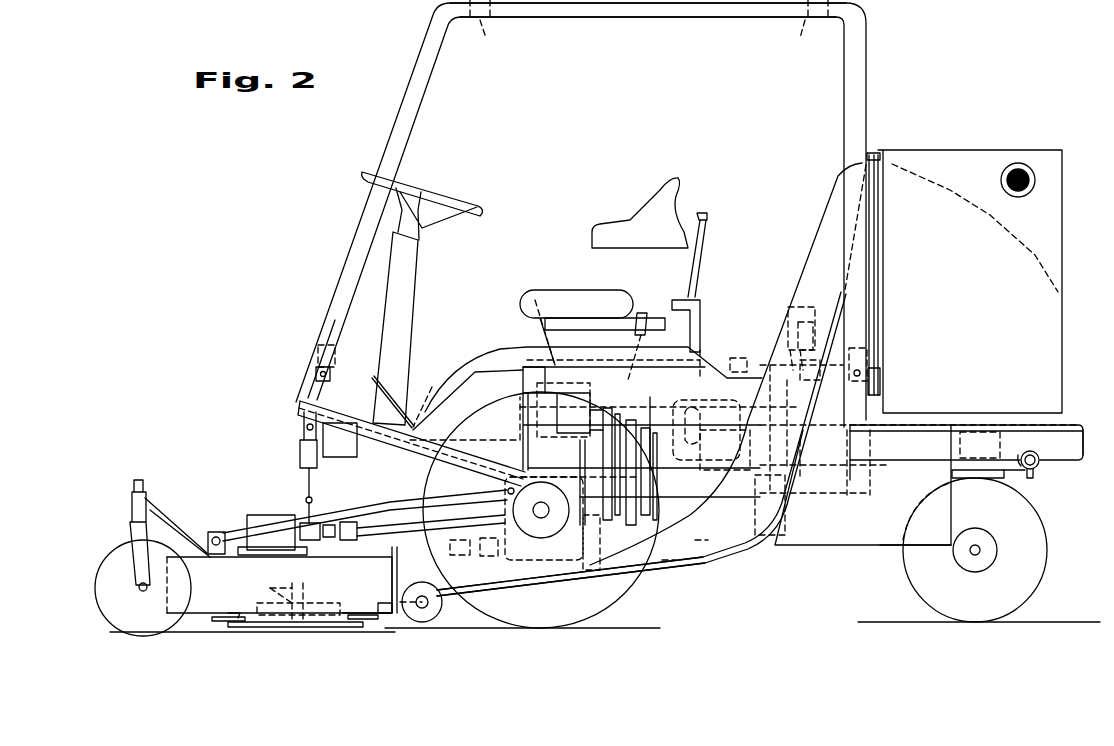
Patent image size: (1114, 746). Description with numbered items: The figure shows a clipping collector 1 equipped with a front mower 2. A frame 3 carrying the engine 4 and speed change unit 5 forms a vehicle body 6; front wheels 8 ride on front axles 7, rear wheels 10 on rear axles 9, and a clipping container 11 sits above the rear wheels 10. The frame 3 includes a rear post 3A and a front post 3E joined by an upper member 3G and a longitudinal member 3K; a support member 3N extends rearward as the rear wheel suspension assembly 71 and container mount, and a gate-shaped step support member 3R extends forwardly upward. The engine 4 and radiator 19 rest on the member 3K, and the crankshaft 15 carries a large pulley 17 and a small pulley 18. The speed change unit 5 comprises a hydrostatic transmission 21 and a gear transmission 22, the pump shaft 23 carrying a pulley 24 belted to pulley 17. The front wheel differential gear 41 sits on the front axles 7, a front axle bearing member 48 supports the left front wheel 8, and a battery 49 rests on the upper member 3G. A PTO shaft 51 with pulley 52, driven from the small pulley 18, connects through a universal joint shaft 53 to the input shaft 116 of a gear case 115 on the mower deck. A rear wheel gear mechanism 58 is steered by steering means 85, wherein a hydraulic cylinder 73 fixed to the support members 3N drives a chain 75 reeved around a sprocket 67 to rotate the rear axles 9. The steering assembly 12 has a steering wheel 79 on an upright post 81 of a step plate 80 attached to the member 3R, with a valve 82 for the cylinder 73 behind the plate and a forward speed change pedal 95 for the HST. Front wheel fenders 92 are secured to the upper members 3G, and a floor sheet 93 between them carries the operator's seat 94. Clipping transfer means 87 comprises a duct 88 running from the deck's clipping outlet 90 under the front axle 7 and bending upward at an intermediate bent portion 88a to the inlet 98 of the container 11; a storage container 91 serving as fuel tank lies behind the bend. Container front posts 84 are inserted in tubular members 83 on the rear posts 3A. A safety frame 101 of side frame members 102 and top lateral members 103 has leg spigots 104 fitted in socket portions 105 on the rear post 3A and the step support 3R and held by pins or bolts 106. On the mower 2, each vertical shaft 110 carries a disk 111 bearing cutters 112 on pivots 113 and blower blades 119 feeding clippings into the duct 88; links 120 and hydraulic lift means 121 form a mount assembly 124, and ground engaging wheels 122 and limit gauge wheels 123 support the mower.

The clipping collector 1 is at (322, 328).
The front mower 2 is at (213, 522).
The frame 3 is at (512, 358).
The rear post 3A is at (860, 412).
The front channel post 3E is at (533, 422).
The upper channel member 3G is at (527, 378).
The longitudinal member 3K is at (727, 542).
The support channel member 3N is at (1067, 428).
The step support member 3R is at (420, 460).
The engine 4 is at (700, 545).
The speed change unit 5 is at (733, 337).
The vehicle body 6 is at (668, 565).
The front axle 7 is at (538, 522).
The front wheel 8 is at (618, 605).
The rear axle 9 is at (974, 558).
The rear wheel 10 is at (905, 562).
The clipping container 11 is at (970, 253).
The steering assembly 12 is at (437, 274).
The crankshaft 15 is at (657, 484).
The large pulley 17 is at (624, 524).
The small pulley 18 is at (580, 510).
The radiator 19 is at (801, 330).
The hydrostatic transmission 21 is at (713, 350).
The gear transmission 22 is at (741, 346).
The pump shaft 23 is at (655, 440).
The pulley 24 is at (573, 414).
The front wheel differential gear 41 is at (500, 520).
The front axle bearing member 48 is at (542, 520).
The battery 49 is at (566, 440).
The PTO shaft 51 is at (505, 558).
The pulley 52 is at (580, 573).
The universal joint shaft 53 is at (400, 506).
The rear wheel gear mechanism 58 is at (973, 430).
The sprocket 67 is at (997, 480).
The rear wheel suspension assembly 71 is at (1082, 462).
The steering hydraulic cylinder 73 is at (1040, 467).
The chain 75 is at (1023, 478).
The steering wheel 79 is at (474, 207).
The step plate 80 is at (432, 392).
The upright post 81 is at (424, 268).
The valve 82 is at (357, 452).
The tubular member 83 is at (882, 385).
The front post 84 is at (883, 356).
The steering means 85 is at (1028, 446).
The clipping transfer means 87 is at (480, 600).
The duct 88 is at (520, 587).
The intermediate bent portion 88a is at (747, 551).
The clipping outlet 90 is at (398, 592).
The storage container 91 is at (848, 531).
The front wheel fender 92 is at (536, 303).
The floor sheet 93 is at (572, 330).
The operator's seat 94 is at (622, 203).
The forward speed change pedal 95 is at (396, 412).
The inlet 98 is at (886, 196).
The safety frame 101 is at (518, 48).
The side frame member 102 is at (430, 63).
The top lateral member 103 is at (648, 41).
The spigot 104 is at (884, 312).
The socket portion 105 is at (312, 370).
The pin or bolt 106 is at (316, 380).
The vertical shaft 110 is at (308, 592).
The disk 111 is at (273, 627).
The cutter 112 is at (218, 623).
The pivot 113 is at (240, 614).
The gear case 115 is at (255, 515).
The input shaft 116 is at (303, 526).
The blades 119 is at (273, 574).
The link 120 is at (343, 508).
The lift means 121 is at (318, 468).
The ground engaging wheel 122 is at (153, 632).
The limit gauge wheel 123 is at (430, 643).
The mount assembly 124 is at (278, 446).